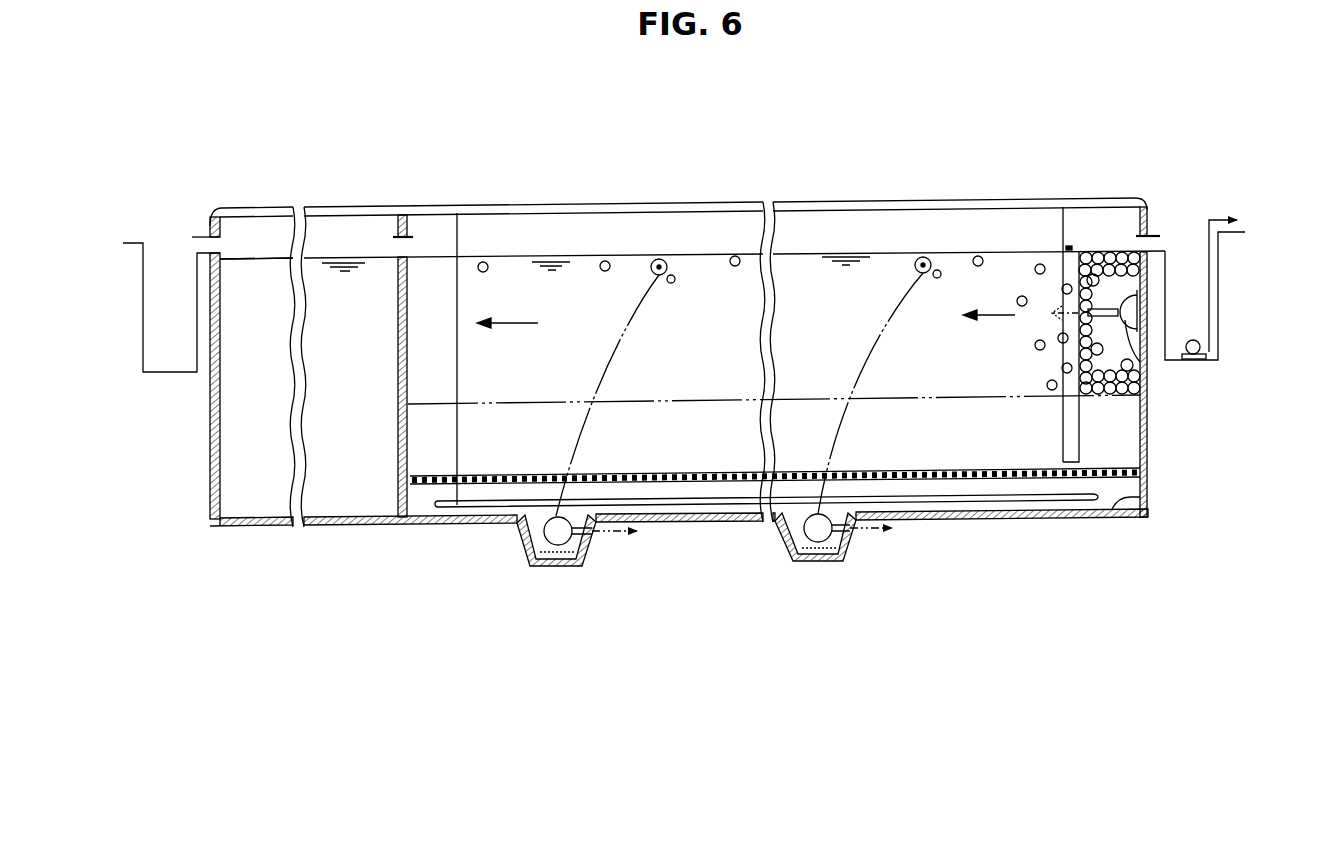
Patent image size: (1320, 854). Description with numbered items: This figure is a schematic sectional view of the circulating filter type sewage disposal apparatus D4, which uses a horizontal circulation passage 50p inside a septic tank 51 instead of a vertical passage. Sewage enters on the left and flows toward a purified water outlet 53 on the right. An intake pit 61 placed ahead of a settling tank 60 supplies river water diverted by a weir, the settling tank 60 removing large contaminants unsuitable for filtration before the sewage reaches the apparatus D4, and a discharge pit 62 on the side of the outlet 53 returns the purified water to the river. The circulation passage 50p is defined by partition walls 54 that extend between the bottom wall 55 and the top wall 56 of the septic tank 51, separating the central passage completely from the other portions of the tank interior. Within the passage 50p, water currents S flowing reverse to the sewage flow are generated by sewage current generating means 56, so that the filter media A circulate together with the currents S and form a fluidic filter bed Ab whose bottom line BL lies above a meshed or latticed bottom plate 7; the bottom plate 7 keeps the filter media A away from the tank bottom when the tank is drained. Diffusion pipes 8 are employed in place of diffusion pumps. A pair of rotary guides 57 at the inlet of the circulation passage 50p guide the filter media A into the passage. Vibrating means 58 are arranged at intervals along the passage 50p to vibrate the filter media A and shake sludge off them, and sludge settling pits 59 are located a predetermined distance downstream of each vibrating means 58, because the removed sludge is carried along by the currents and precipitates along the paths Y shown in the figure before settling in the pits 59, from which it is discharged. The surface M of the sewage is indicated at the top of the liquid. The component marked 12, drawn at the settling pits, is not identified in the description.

The bottom plate 7 is at (912, 481).
The diffusion pipe 8 is at (948, 503).
The aeration well 12 is at (525, 541).
The septic tank 51 is at (1148, 420).
The purified water outlet 53 is at (1150, 244).
The partition wall 54 is at (1064, 226).
The bottom wall 55 is at (1150, 503).
The top wall 56 is at (828, 199).
The rotary guide 57 is at (1080, 442).
The vibrating means 58 is at (660, 259).
The sludge settling pit 59 is at (557, 566).
The settling tank 60 is at (257, 498).
The intake pit 61 is at (167, 358).
The discharge pit 62 is at (1215, 348).
The filter media A is at (676, 276).
The surface M is at (343, 257).
The water currents S is at (507, 323).
The sludge precipitation path Y is at (602, 352).
The bottom line BL is at (983, 405).
The filter bed Ab is at (1112, 400).
The circulation passage 50p is at (694, 340).
The circulating filter type sewage disposal apparatus D4 is at (548, 183).